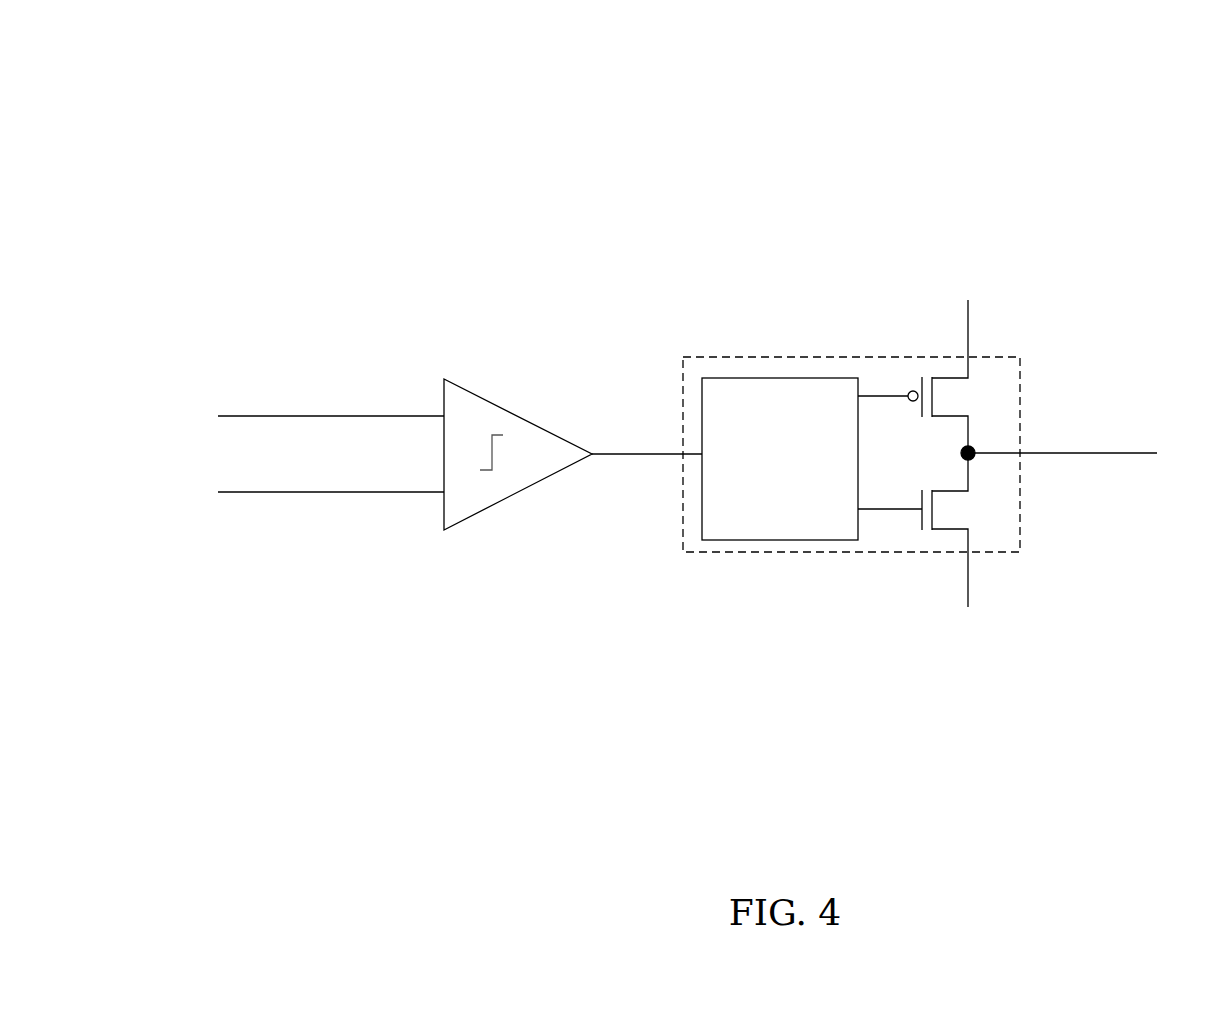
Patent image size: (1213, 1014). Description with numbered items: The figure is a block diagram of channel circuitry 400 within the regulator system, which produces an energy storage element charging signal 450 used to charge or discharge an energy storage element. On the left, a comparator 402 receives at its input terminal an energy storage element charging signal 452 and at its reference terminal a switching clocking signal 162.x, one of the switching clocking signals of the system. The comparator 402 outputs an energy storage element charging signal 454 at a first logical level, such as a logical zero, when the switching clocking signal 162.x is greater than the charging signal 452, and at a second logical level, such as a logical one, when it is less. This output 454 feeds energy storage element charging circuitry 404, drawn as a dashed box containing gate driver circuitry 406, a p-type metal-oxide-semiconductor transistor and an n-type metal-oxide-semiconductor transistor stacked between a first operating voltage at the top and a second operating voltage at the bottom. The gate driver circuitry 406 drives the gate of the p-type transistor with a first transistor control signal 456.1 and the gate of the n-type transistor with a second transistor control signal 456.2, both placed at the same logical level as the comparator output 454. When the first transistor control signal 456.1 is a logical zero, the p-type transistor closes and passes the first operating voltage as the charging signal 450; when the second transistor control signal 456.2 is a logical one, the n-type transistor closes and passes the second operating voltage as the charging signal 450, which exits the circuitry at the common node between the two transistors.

The channel circuitry 400 is at (1133, 104).
The comparator 402 is at (505, 412).
The energy storage element charging circuitry 404 is at (1020, 357).
The gate driver circuitry 406 is at (783, 380).
The energy storage element charging signal 450 is at (1086, 454).
The energy storage element charging signal 452 is at (307, 415).
The energy storage element charging signal 454 is at (620, 456).
The first transistor control signal 456.1 is at (878, 396).
The second transistor control signal 456.2 is at (880, 510).
The switching clocking signal 162.x is at (304, 492).